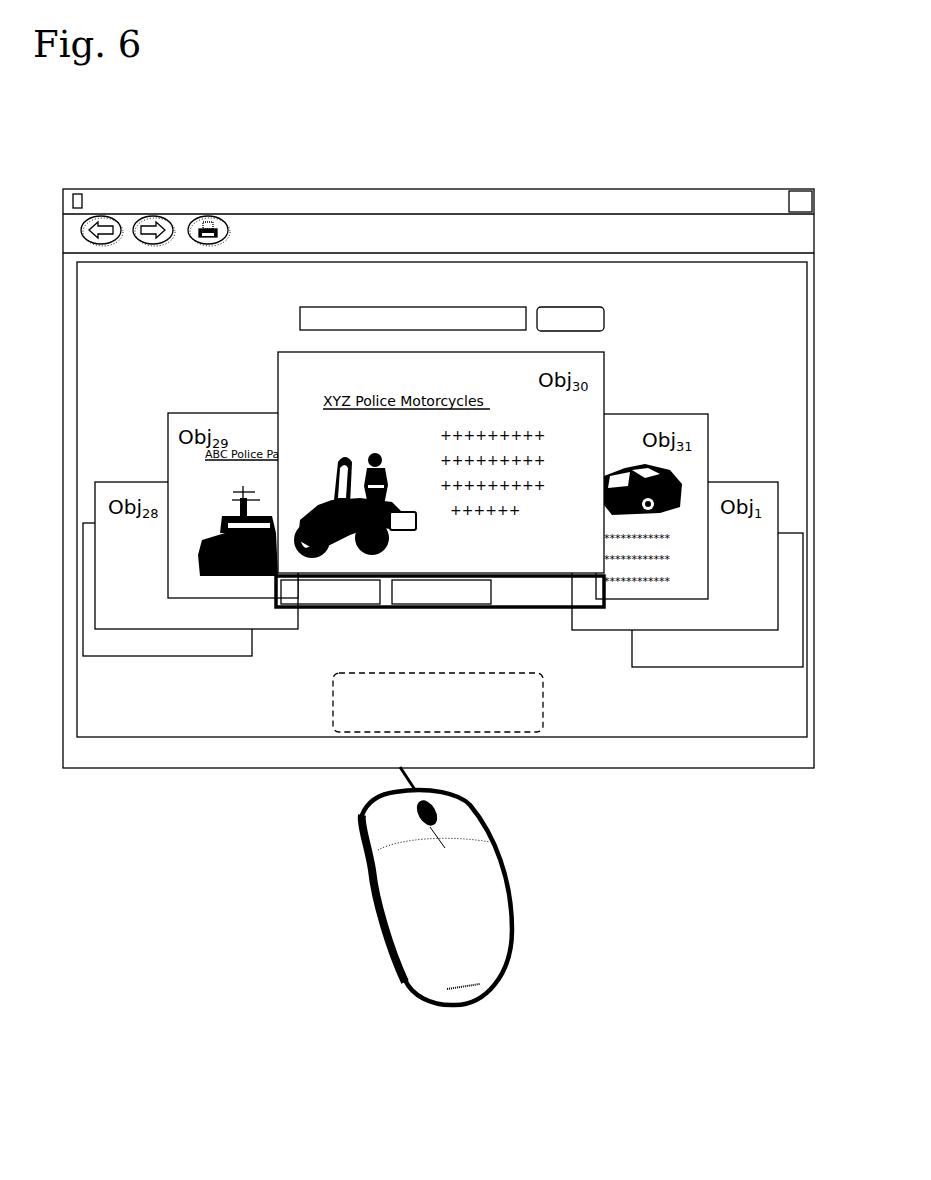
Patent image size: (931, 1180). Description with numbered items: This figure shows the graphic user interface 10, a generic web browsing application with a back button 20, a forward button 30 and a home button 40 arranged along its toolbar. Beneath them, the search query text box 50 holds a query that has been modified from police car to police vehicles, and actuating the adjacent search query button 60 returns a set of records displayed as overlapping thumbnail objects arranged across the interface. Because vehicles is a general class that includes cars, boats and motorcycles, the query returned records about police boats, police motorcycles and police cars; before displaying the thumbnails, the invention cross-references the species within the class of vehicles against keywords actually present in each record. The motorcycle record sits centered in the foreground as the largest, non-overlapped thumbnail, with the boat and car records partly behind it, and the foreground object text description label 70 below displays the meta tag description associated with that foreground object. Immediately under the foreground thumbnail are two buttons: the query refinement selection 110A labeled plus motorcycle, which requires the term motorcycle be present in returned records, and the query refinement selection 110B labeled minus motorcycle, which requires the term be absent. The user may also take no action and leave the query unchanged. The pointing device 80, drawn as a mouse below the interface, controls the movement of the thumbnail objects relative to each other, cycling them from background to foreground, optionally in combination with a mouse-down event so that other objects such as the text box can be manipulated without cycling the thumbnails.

The graphic user interface 10 is at (493, 188).
The back button 20 is at (104, 244).
The forward button 30 is at (150, 244).
The home button 40 is at (230, 227).
The search query text box 50 is at (315, 303).
The search query button 60 is at (600, 305).
The foreground object text description label 70 is at (540, 675).
The pointing device 80 is at (510, 947).
The query refinement selection 110A is at (318, 610).
The query refinement selection 110B is at (425, 610).